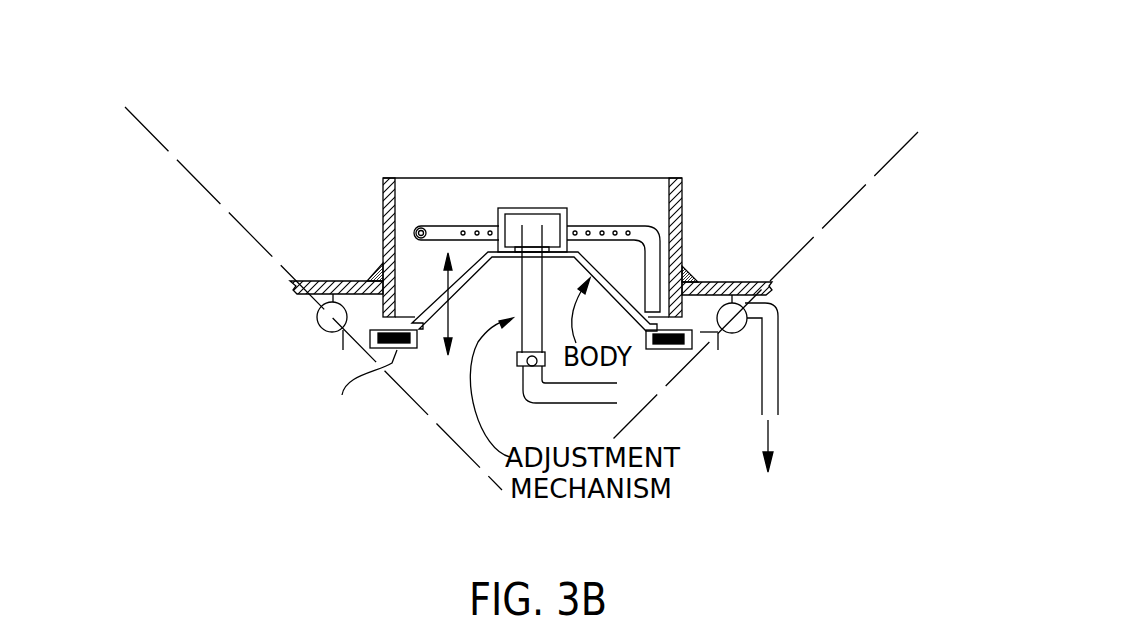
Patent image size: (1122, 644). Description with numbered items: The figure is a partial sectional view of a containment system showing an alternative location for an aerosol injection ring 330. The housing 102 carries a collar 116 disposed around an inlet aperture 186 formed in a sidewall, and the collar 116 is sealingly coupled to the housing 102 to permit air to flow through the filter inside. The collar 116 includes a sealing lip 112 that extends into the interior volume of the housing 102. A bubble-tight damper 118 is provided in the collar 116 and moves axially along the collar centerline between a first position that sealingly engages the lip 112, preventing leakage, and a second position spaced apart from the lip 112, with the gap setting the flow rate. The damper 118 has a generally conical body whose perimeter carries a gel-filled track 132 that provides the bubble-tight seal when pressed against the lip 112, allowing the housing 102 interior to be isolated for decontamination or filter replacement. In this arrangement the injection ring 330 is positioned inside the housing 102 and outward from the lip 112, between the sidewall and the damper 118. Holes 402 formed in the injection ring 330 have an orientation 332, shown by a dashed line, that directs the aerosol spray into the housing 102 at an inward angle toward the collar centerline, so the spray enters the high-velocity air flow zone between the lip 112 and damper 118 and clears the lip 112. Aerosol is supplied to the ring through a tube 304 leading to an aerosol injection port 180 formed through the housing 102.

The collar 116 is at (383, 193).
The housing 102 is at (737, 282).
The sealing lip 112 is at (369, 308).
The bubble-tight damper 118 is at (472, 260).
The inlet aperture 186 is at (619, 275).
The gel-filled track 132 is at (417, 350).
The holes 402 is at (322, 330).
The aerosol injection ring 330 is at (317, 314).
The orientation 332 is at (182, 167).
The tube 304 is at (778, 360).
The aerosol injection port 180 is at (775, 479).